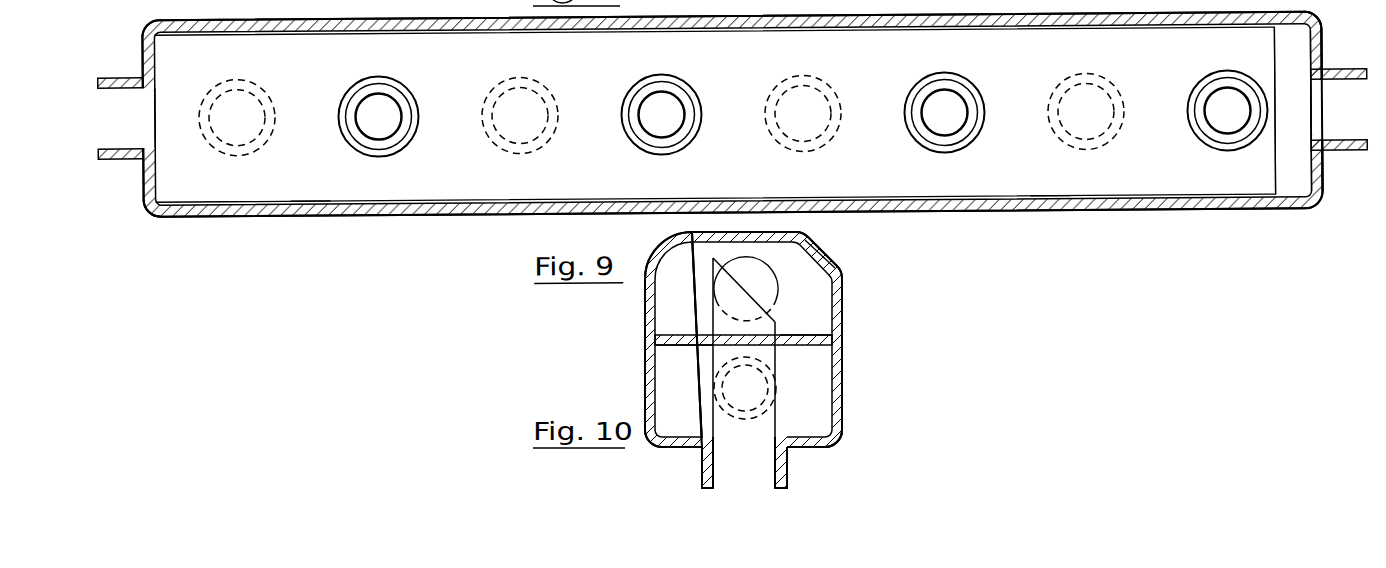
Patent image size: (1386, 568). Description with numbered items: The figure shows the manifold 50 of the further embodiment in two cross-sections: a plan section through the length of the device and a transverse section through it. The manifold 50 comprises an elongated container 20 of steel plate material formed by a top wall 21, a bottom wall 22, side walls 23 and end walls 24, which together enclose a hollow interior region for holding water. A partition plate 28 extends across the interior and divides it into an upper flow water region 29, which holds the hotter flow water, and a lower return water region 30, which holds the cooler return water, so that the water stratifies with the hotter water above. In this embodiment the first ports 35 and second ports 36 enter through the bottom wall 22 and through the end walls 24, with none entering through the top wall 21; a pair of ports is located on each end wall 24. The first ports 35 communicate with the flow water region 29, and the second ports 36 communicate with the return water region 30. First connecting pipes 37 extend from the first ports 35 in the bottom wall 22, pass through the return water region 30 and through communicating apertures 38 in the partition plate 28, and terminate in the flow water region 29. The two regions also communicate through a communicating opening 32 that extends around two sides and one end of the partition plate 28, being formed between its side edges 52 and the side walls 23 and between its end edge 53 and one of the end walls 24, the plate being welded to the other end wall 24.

In FIG. 10, the container 20 is at (841, 387).
In FIG. 10, the top wall 21 is at (767, 228).
In FIG. 10, the bottom wall 22 is at (817, 449).
In FIG. 9, the side walls 23 is at (414, 211).
In FIG. 10, the side walls 23 is at (837, 352).
In FIG. 9, the end walls 24 is at (150, 173).
In FIG. 10, the end walls 24 is at (822, 425).
In FIG. 9, the partition plate 28 is at (1043, 179).
In FIG. 10, the partition plate 28 is at (797, 332).
In FIG. 9, the flow water region 29 is at (310, 177).
In FIG. 10, the flow water region 29 is at (687, 263).
In FIG. 10, the return water region 30 is at (680, 377).
In FIG. 9, the communicating opening 32 is at (1290, 184).
In FIG. 9, the first ports 35 is at (110, 102).
In FIG. 10, the second ports 36 is at (745, 455).
In FIG. 9, the first connecting pipes 37 is at (395, 91).
In FIG. 10, the first connecting pipes 37 is at (717, 358).
In FIG. 9, the communicating apertures 38 is at (398, 145).
In FIG. 9, the manifold 50 is at (340, 285).
In FIG. 10, the manifold 50 is at (537, 369).
In FIG. 9, the side edges 52 is at (523, 31).
In FIG. 10, the side edges 52 is at (828, 340).
In FIG. 9, the end edge 53 is at (1277, 77).